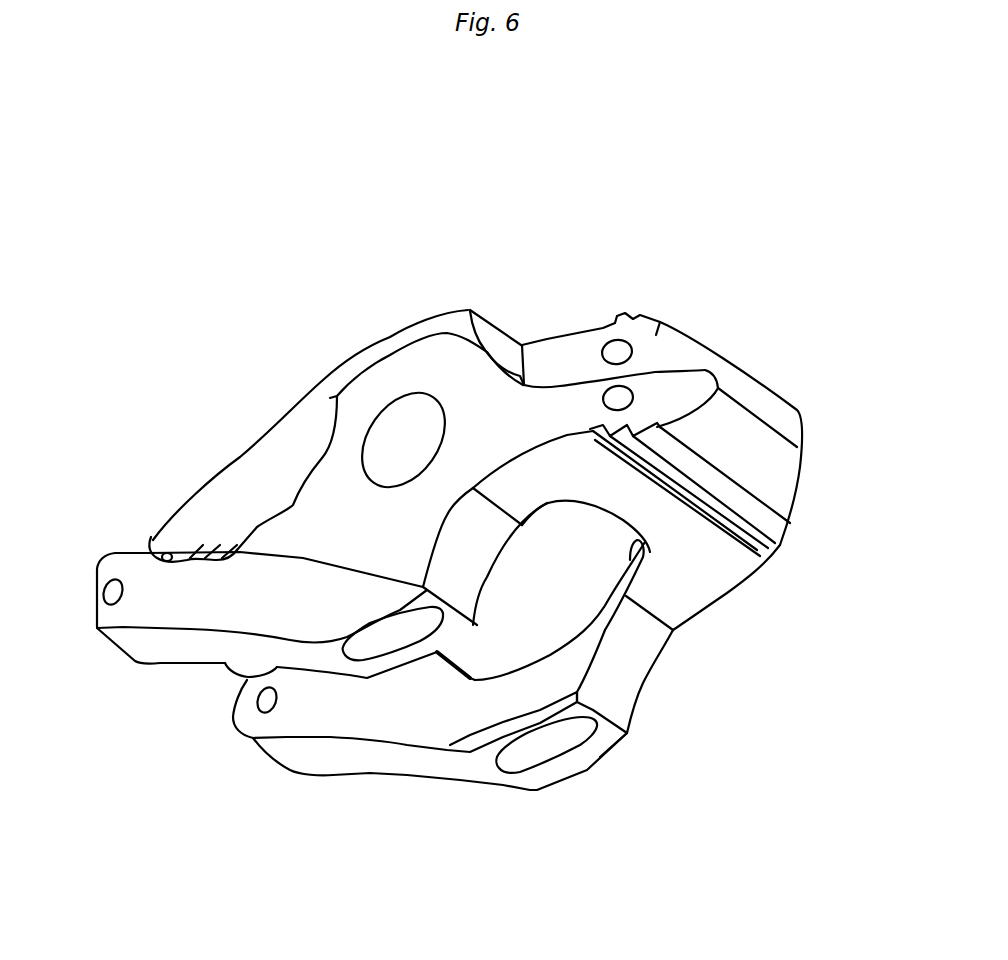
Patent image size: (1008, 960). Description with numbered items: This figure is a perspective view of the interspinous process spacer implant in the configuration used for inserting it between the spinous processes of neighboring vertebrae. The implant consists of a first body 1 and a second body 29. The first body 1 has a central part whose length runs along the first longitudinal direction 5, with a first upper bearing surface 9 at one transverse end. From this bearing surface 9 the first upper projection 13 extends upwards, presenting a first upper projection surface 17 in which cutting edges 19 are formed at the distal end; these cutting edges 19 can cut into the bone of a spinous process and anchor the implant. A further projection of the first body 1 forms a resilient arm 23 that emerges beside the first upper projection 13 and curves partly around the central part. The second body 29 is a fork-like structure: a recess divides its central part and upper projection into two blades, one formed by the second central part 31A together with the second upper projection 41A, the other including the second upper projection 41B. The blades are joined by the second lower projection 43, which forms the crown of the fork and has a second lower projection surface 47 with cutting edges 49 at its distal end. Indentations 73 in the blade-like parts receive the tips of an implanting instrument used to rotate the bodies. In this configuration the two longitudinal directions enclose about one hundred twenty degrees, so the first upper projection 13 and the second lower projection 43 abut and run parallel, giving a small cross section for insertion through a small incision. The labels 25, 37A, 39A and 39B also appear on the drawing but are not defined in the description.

The first body 1 is at (398, 283).
The first longitudinal direction 5 is at (395, 425).
The first upper bearing surface 9 is at (493, 342).
The first upper projection 13 is at (582, 352).
The first upper projection surface 17 is at (547, 339).
The cutting edges 19 is at (660, 322).
The resilient arm 23 is at (510, 645).
The edge 25 is at (462, 671).
The second body 29 is at (785, 688).
The second central part 31A is at (302, 557).
The plate 37A is at (317, 460).
The first side wall 39A is at (454, 579).
The second side wall 39B is at (628, 673).
The second upper projection 41A is at (183, 605).
The second upper projection 41B is at (343, 758).
The second lower projection 43 is at (668, 393).
The second lower projection surface 47 is at (697, 560).
The cutting edges 49 is at (768, 556).
The indentation 73 is at (383, 640).